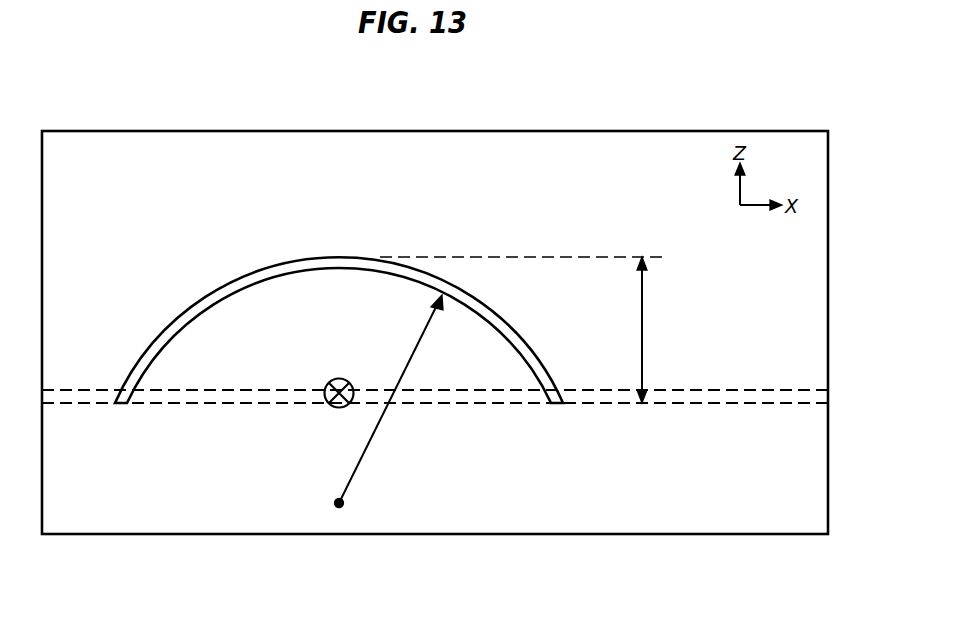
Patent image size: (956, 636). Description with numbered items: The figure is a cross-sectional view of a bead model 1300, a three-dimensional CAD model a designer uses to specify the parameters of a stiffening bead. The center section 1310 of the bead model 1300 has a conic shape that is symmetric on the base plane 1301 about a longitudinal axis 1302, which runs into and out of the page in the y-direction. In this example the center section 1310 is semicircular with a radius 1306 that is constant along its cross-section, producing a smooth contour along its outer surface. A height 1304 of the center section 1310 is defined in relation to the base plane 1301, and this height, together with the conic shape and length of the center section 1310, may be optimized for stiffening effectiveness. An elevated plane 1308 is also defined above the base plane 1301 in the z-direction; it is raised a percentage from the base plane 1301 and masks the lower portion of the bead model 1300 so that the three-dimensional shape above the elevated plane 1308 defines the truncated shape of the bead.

The bead model 1300 is at (96, 131).
The base plane 1301 is at (728, 404).
The longitudinal axis 1302 is at (333, 408).
The height 1304 is at (643, 292).
The radius 1306 is at (370, 440).
The elevated plane 1308 is at (782, 390).
The center section 1310 is at (266, 265).